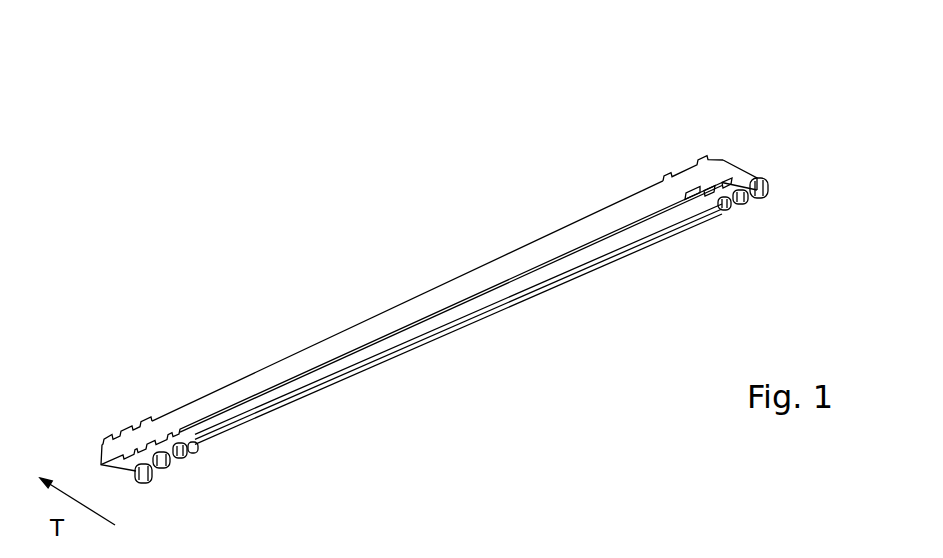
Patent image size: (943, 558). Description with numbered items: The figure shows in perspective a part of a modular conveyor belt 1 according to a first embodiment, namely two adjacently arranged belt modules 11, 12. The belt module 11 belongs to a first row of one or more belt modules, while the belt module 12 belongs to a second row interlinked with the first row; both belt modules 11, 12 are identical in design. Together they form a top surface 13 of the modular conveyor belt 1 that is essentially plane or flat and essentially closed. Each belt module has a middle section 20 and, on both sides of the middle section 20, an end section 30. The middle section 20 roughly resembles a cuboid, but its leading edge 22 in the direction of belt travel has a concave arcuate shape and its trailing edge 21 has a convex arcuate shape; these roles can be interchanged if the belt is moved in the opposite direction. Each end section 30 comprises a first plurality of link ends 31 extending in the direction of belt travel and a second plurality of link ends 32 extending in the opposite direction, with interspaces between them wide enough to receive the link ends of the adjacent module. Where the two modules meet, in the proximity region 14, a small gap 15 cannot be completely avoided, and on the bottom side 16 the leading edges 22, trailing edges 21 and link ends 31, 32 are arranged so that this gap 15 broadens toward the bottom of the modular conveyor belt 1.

The modular conveyor belt 1 is at (158, 194).
The belt module 11 is at (742, 179).
The belt module 12 is at (715, 163).
The top surface 13 is at (555, 235).
The proximity region 14 is at (419, 304).
The gap 15 is at (322, 360).
The bottom side 16 is at (555, 308).
The middle section 20 is at (425, 220).
The trailing edge 21 is at (258, 418).
The leading edge 22 is at (238, 392).
The end section 30 is at (698, 117).
The link end 31 is at (709, 190).
The link end 32 is at (690, 186).